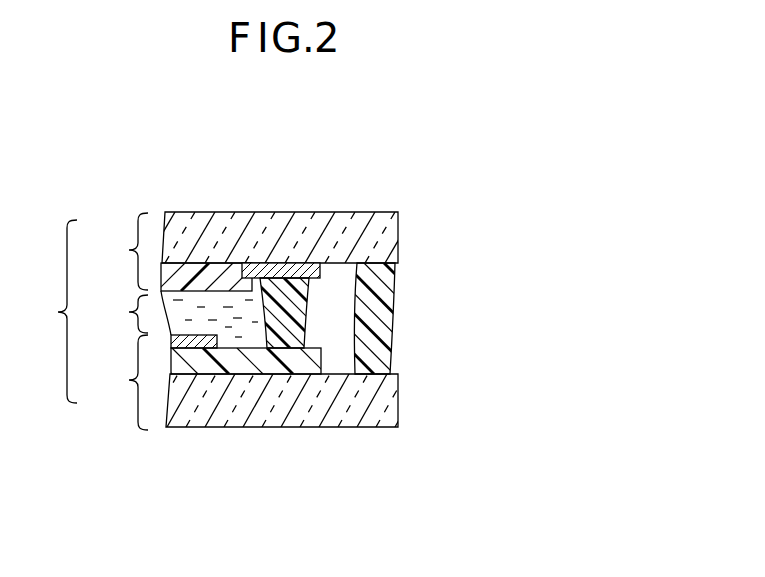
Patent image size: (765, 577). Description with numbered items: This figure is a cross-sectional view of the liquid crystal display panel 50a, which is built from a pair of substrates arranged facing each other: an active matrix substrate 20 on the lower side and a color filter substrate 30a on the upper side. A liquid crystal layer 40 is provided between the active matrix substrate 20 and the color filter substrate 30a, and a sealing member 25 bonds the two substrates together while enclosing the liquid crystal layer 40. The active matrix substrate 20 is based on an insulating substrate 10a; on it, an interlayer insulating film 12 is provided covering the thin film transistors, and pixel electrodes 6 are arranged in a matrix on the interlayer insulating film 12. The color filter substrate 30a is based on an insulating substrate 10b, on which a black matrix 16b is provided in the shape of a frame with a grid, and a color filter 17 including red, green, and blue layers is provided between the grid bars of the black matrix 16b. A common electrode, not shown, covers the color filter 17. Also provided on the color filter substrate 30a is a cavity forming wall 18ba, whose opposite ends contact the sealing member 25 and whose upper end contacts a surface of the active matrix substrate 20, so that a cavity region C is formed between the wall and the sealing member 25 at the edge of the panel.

The insulating substrate 10b is at (390, 235).
The insulating substrate 10a is at (390, 403).
The liquid crystal display panel 50a is at (187, 304).
The color filter substrate 30a is at (222, 232).
The liquid crystal layer 40 is at (173, 314).
The active matrix substrate 20 is at (207, 413).
The color filter 17 is at (217, 277).
The cavity forming wall 18ba is at (278, 289).
The black matrix 16b is at (305, 270).
The pixel electrode 6 is at (188, 337).
The interlayer insulating film 12 is at (270, 362).
The sealing member 25 is at (332, 327).
The cavity region C is at (390, 343).